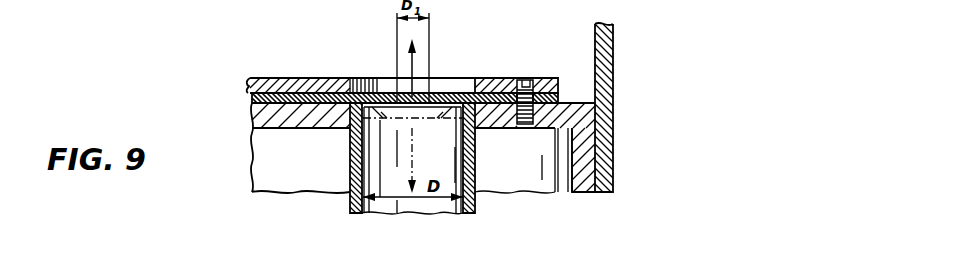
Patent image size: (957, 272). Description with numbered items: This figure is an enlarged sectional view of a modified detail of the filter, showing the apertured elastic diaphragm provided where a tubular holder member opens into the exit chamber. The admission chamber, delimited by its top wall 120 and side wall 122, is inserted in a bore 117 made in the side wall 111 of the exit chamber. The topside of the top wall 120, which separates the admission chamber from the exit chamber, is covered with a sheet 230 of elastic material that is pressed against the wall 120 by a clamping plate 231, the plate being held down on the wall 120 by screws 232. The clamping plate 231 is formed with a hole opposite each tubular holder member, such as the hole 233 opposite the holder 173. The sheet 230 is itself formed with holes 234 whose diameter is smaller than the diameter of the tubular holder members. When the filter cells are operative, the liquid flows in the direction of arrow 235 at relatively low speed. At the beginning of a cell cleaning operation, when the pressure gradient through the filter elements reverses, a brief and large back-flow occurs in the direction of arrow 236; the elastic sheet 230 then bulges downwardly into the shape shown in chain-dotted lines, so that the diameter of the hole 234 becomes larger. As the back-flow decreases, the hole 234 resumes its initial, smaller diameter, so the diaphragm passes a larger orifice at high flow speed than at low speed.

The side wall 111 is at (606, 55).
The bore 117 is at (598, 137).
The top wall 120 is at (256, 120).
The side wall 122 is at (578, 181).
The tubular holder member 173 is at (357, 214).
The sheet of elastic material 230 is at (252, 99).
The clamping plate 231 is at (266, 84).
The screw 232 is at (521, 80).
The hole 233 is at (470, 82).
The hole 234 is at (418, 104).
The arrow 235 is at (410, 68).
The arrow 236 is at (412, 160).